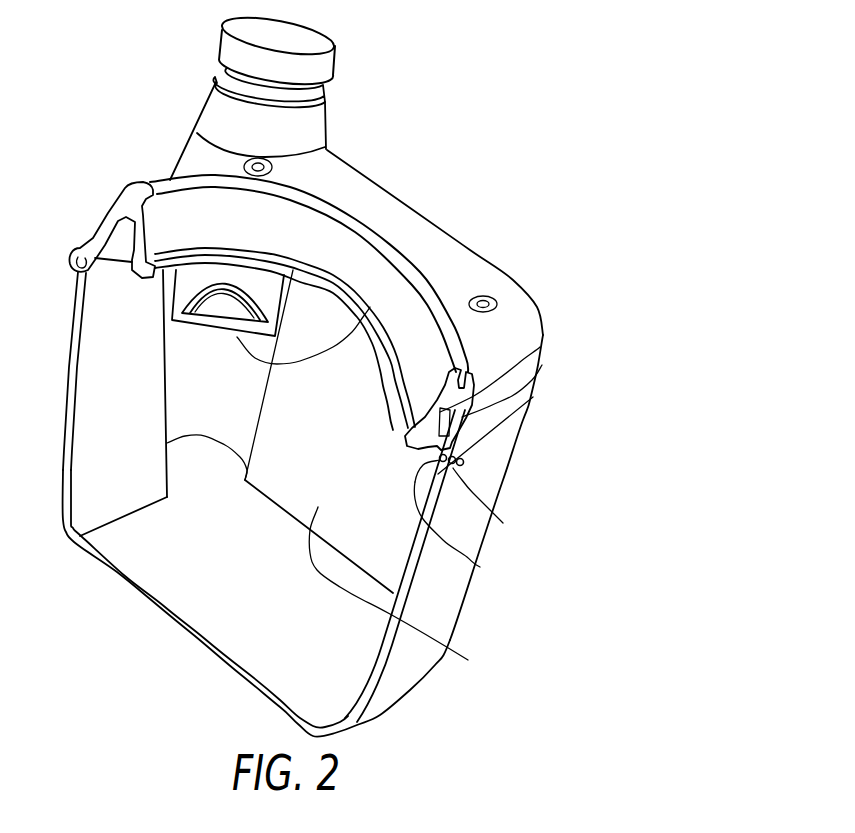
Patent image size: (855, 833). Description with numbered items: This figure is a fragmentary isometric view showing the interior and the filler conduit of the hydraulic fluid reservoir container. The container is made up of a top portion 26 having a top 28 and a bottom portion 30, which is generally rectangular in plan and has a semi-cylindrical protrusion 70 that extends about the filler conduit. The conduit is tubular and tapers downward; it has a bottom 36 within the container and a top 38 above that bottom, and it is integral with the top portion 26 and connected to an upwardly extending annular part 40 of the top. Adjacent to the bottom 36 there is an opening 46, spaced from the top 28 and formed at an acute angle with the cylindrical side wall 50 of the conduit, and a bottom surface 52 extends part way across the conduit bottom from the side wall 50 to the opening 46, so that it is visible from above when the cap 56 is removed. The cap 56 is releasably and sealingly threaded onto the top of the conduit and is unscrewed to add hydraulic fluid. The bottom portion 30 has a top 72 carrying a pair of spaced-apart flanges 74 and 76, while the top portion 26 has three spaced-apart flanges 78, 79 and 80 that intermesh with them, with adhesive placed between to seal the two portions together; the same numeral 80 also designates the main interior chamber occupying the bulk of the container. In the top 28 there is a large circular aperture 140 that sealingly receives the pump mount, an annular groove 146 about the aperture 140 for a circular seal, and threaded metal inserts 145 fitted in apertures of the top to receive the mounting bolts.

The top portion 26 is at (523, 372).
The top 28 is at (413, 228).
The bottom portion 30 is at (435, 598).
The bottom of the filler conduit 36 is at (370, 307).
The top of the filler conduit 38 is at (313, 88).
The annular part 40 is at (302, 127).
The opening 46 is at (227, 291).
The cylindrical side wall 50 is at (180, 288).
The bottom surface 52 is at (220, 322).
The cap 56 is at (322, 57).
The semi-cylindrical protrusion 70 is at (188, 400).
The top of the bottom portion 72 is at (503, 523).
The flange 74 is at (480, 567).
The flange 76 is at (460, 468).
The flange 78 is at (453, 447).
The flange 79 is at (460, 460).
The flange / main interior chamber 80 is at (463, 466).
The circular aperture 140 is at (432, 360).
The threaded metal inserts 145 is at (487, 298).
The annular groove 146 is at (146, 188).